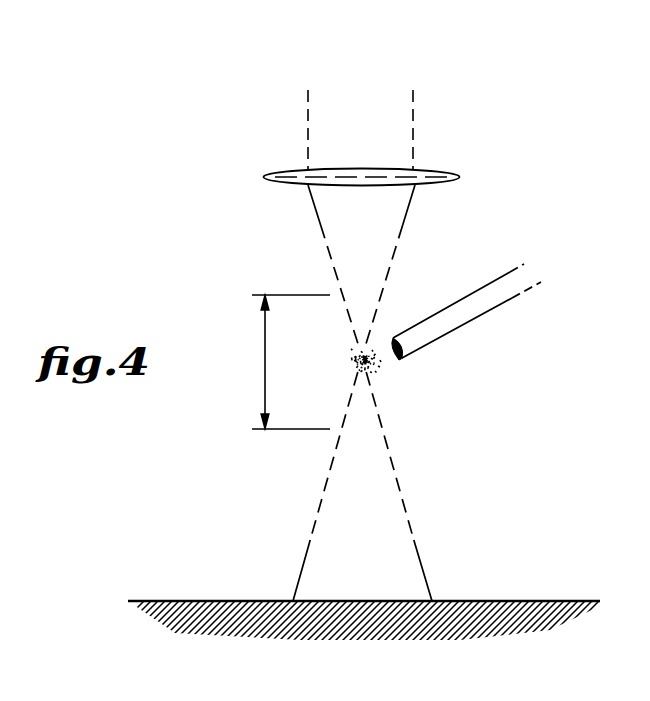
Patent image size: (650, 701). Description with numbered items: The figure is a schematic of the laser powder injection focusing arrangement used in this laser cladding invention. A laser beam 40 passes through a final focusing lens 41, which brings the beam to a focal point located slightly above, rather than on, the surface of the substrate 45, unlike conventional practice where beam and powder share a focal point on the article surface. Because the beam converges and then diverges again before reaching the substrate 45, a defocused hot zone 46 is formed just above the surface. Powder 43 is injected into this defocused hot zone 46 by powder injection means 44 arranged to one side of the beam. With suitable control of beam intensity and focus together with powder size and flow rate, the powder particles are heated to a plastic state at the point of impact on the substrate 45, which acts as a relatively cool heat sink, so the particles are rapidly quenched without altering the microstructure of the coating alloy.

The laser beam 40 is at (303, 88).
The final focusing lens 41 is at (439, 171).
The powder 43 is at (384, 369).
The powder injection means 44 is at (463, 317).
The substrate 45 is at (552, 601).
The defocused hot zone 46 is at (290, 362).